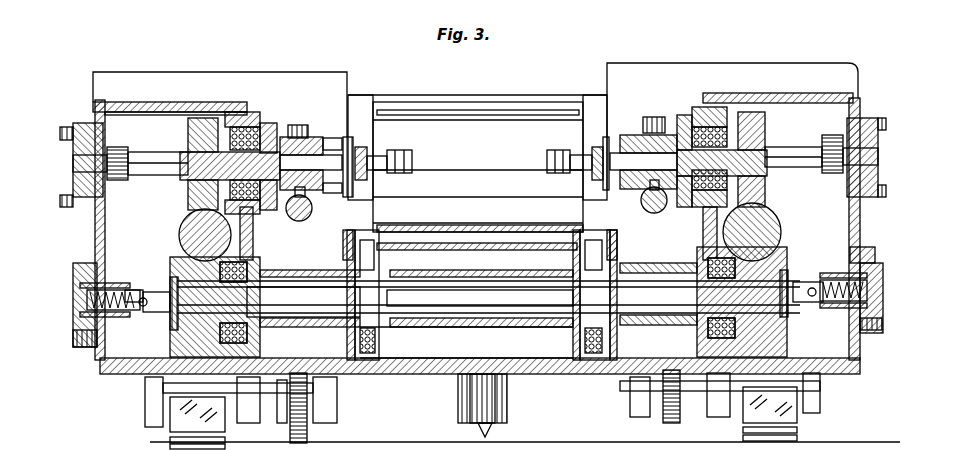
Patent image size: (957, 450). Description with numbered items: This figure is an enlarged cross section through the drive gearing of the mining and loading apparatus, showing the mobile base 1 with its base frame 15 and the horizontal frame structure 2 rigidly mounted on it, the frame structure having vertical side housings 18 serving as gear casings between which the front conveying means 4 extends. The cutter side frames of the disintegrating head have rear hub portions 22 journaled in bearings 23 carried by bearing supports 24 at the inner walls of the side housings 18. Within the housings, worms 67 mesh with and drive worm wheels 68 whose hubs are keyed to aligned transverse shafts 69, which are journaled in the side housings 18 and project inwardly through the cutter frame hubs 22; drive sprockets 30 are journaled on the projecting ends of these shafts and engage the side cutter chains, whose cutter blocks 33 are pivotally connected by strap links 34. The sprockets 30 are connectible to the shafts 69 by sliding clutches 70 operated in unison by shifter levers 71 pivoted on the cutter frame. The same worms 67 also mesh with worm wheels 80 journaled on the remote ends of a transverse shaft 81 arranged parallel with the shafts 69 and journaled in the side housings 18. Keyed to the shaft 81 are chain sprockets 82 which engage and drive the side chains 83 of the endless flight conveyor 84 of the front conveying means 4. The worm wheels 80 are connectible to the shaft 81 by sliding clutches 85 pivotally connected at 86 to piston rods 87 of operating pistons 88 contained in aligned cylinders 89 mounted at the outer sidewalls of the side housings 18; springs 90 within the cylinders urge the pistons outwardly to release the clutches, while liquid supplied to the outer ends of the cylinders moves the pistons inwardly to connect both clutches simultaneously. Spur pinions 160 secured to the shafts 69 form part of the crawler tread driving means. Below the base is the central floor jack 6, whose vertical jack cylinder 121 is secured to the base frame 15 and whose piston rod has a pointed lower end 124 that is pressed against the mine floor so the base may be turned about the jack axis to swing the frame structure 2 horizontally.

The mobile base 1 is at (810, 406).
The frame structure 2 is at (858, 88).
The front conveying means 4 is at (519, 100).
The central floor jack 6 is at (507, 402).
The base frame 15 is at (446, 362).
The side housings 18 is at (147, 102).
The rear hub portions 22 is at (268, 123).
The bearings 23 is at (242, 112).
The bearing supports 24 is at (240, 127).
The drive sprockets 30 is at (298, 125).
The cutter blocks 33 is at (297, 221).
The strap links 34 is at (306, 137).
The worms 67 is at (179, 235).
The worm wheels 68 is at (200, 118).
The transverse shafts 69 is at (150, 152).
The sliding clutches 70 is at (350, 137).
The shifter levers 71 is at (400, 150).
The worm wheels 80 is at (152, 376).
The transverse shaft 81 is at (296, 290).
The chain sprockets 82 is at (372, 358).
The side chains 83 is at (358, 360).
The endless flight conveyor 84 is at (445, 102).
The sliding clutches 85 is at (172, 320).
The pivotal connection 86 is at (147, 298).
The piston rods 87 is at (130, 290).
The operating pistons 88 is at (95, 290).
The cylinders 89 is at (92, 346).
The springs 90 is at (100, 325).
The jack cylinder 121 is at (458, 410).
The pointed lower end 124 is at (492, 430).
The spur pinions 160 is at (118, 181).